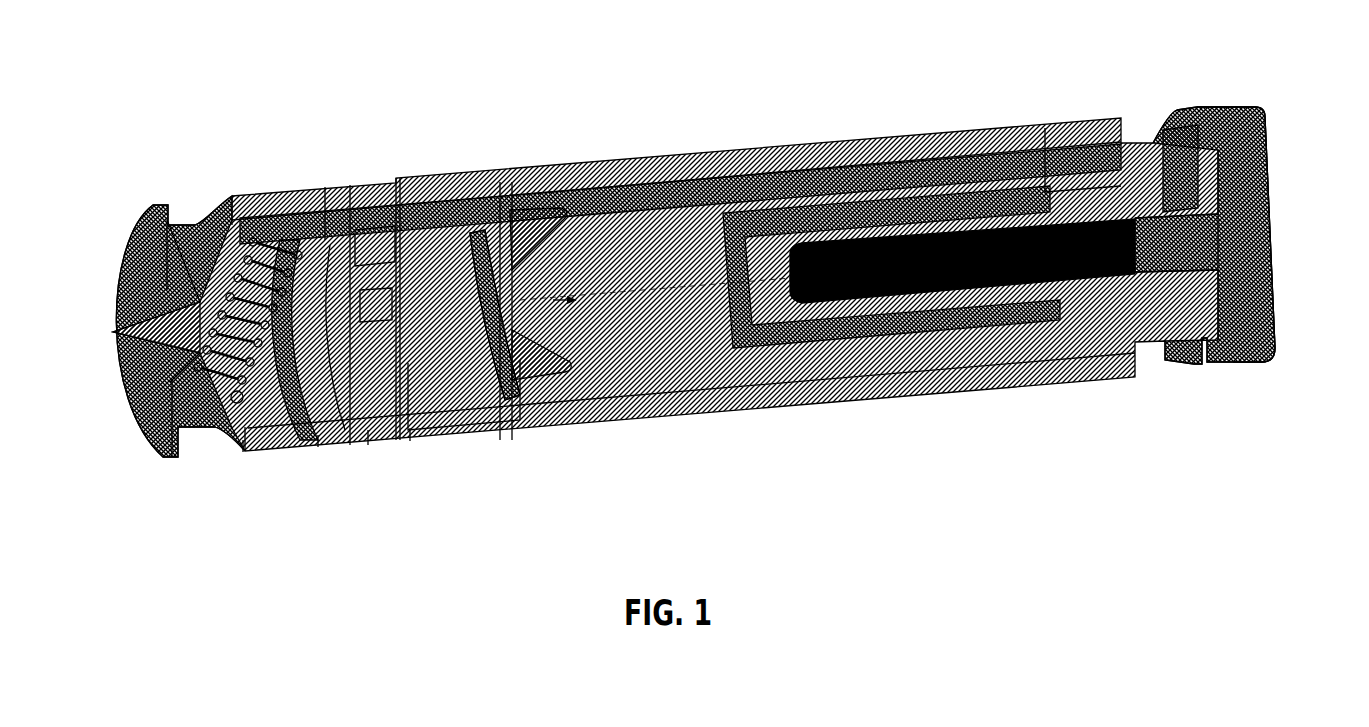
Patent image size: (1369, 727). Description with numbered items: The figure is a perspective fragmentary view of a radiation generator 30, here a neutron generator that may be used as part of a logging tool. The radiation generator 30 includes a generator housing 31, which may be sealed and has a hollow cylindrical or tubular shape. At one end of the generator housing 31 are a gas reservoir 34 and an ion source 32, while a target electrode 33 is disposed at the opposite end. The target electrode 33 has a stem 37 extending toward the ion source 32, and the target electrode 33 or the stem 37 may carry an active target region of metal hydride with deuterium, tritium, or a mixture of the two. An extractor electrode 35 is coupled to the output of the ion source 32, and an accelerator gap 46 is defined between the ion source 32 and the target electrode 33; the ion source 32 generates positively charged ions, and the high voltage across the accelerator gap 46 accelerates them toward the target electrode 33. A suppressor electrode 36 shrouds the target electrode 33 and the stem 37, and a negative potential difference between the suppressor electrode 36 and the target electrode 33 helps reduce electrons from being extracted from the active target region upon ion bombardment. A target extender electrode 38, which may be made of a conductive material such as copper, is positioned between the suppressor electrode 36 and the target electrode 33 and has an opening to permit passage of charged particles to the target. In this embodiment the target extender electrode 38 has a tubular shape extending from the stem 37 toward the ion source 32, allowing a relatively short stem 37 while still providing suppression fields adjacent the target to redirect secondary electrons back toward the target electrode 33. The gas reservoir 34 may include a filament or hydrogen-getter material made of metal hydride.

The radiation generator 30 is at (740, 305).
The generator housing 31 is at (689, 160).
The ion source 32 is at (443, 332).
The target electrode 33 is at (1265, 220).
The gas reservoir 34 is at (270, 382).
The extractor electrode 35 is at (542, 222).
The suppressor electrode 36 is at (815, 202).
The stem 37 is at (1177, 208).
The target extender electrode 38 is at (858, 298).
The accelerator gap 46 is at (652, 332).